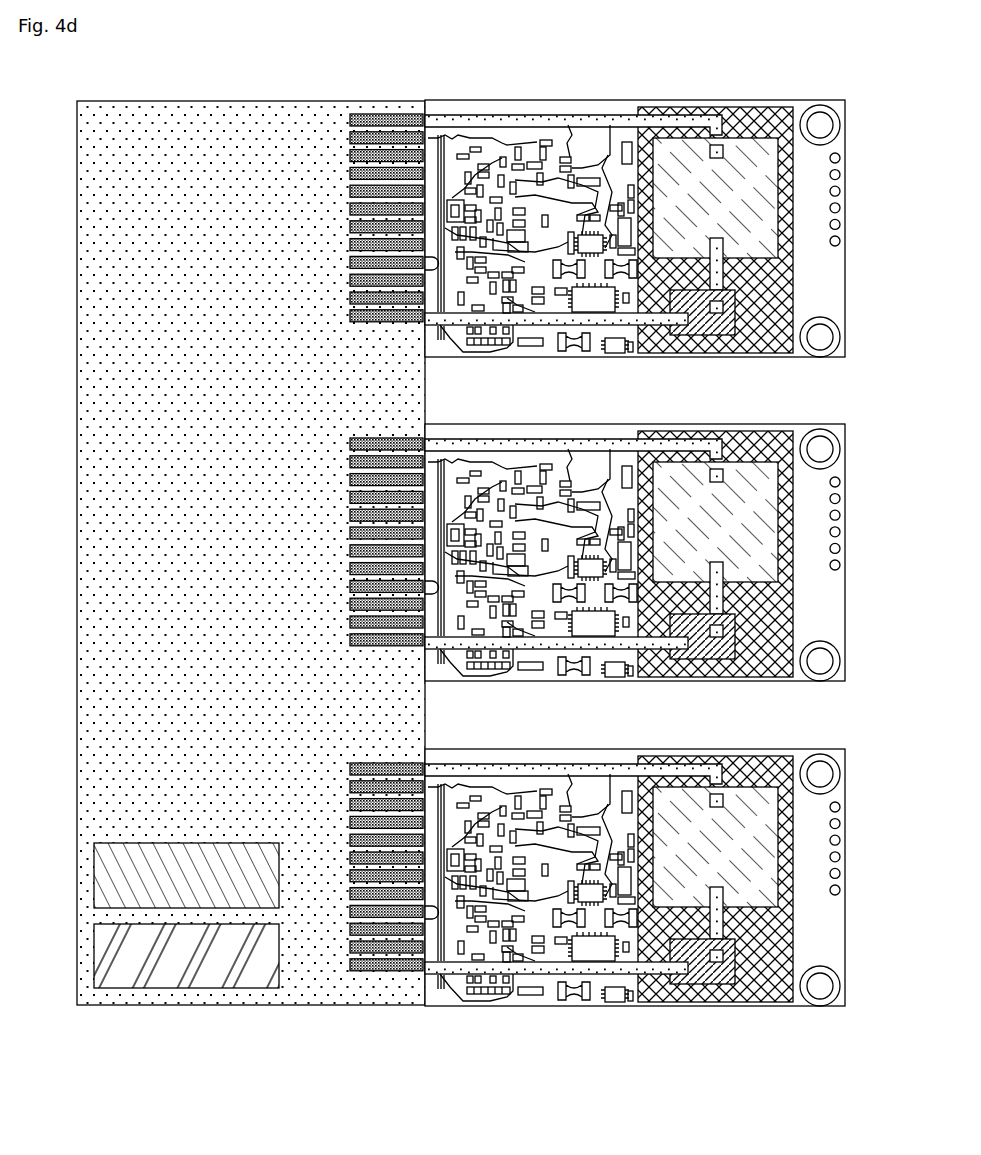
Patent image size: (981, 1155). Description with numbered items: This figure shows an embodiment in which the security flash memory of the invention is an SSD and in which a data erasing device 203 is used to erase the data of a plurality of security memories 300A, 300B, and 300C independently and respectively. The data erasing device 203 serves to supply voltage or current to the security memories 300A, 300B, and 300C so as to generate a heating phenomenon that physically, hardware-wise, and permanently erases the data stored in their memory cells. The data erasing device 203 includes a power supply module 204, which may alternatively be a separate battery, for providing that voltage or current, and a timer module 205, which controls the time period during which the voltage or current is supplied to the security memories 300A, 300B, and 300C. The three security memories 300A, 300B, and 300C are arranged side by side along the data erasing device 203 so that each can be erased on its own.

The data erasing device 203 is at (105, 557).
The power supply module 204 is at (104, 876).
The timer module 205 is at (105, 957).
The security memory 300A is at (846, 220).
The security memory 300B is at (846, 545).
The security memory 300C is at (846, 868).